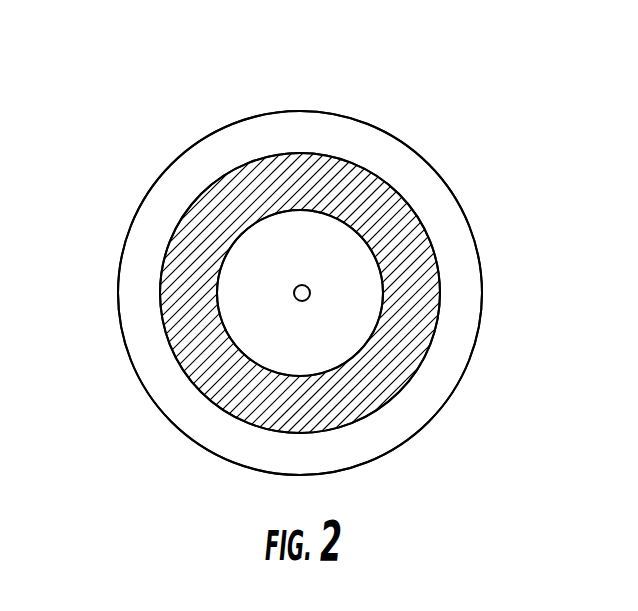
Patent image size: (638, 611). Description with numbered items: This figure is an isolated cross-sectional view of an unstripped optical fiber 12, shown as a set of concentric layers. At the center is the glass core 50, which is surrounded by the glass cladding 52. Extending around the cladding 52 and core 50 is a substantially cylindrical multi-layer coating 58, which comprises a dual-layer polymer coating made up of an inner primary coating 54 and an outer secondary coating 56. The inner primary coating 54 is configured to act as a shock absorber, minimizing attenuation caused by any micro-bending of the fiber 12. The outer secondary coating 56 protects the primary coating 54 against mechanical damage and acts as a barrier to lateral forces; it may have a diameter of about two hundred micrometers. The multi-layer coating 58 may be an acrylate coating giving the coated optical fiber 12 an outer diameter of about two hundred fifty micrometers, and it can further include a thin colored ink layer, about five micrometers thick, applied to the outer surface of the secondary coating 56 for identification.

The optical fiber 12 is at (102, 165).
The glass core 50 is at (310, 291).
The glass cladding 52 is at (333, 322).
The inner primary coating 54 is at (413, 221).
The outer secondary coating 56 is at (397, 138).
The multi-layer coating 58 is at (358, 120).